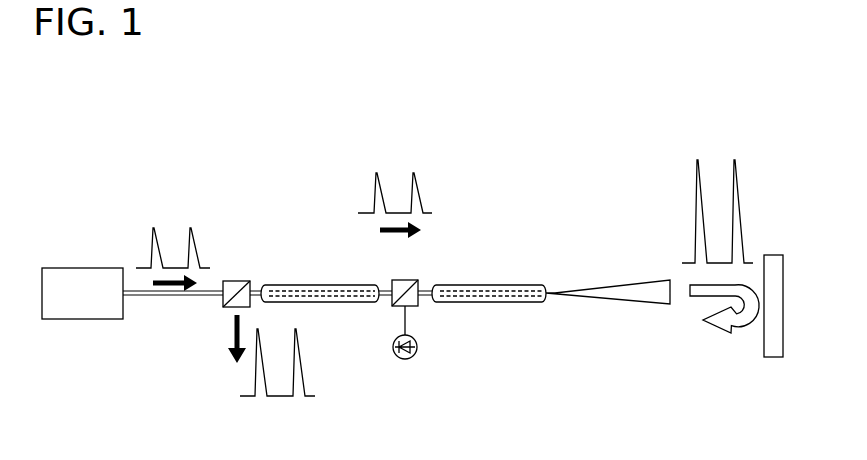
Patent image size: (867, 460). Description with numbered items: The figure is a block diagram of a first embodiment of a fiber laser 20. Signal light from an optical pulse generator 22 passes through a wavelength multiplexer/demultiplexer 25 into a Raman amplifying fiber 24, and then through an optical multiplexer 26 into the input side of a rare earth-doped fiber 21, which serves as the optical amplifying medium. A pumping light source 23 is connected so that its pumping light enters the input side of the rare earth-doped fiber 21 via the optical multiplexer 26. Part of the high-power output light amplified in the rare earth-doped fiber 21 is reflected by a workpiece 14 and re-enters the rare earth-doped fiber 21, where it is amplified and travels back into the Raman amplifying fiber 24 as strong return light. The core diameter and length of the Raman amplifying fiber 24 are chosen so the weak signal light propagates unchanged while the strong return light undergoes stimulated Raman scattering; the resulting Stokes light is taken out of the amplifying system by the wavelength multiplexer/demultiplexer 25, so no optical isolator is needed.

The fiber laser 20 is at (352, 159).
The optical pulse generator 22 is at (85, 268).
The wavelength multiplexer/demultiplexer 25 is at (237, 281).
The Raman amplifying fiber 24 is at (322, 285).
The optical multiplexer 26 is at (408, 280).
The rare earth-doped fiber 21 is at (485, 285).
The pumping light source 23 is at (417, 350).
The workpiece 14 is at (773, 357).